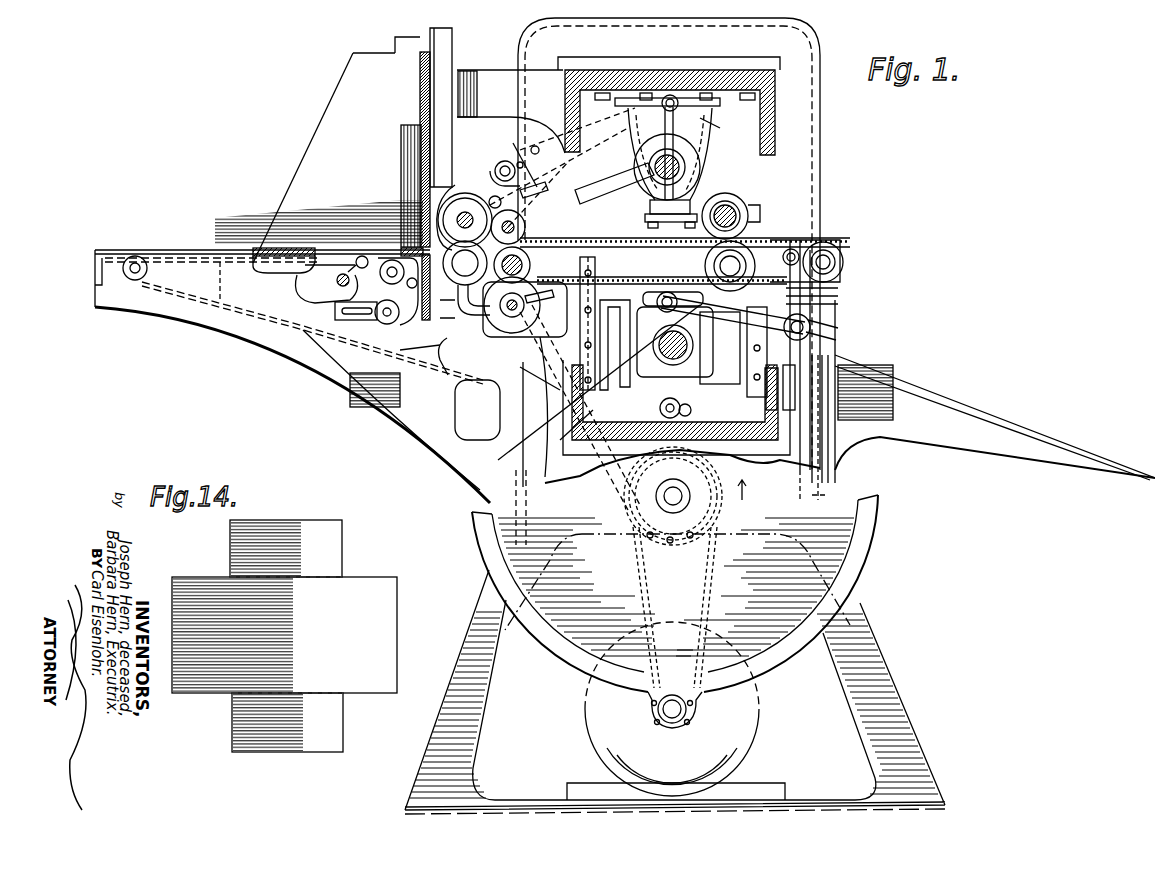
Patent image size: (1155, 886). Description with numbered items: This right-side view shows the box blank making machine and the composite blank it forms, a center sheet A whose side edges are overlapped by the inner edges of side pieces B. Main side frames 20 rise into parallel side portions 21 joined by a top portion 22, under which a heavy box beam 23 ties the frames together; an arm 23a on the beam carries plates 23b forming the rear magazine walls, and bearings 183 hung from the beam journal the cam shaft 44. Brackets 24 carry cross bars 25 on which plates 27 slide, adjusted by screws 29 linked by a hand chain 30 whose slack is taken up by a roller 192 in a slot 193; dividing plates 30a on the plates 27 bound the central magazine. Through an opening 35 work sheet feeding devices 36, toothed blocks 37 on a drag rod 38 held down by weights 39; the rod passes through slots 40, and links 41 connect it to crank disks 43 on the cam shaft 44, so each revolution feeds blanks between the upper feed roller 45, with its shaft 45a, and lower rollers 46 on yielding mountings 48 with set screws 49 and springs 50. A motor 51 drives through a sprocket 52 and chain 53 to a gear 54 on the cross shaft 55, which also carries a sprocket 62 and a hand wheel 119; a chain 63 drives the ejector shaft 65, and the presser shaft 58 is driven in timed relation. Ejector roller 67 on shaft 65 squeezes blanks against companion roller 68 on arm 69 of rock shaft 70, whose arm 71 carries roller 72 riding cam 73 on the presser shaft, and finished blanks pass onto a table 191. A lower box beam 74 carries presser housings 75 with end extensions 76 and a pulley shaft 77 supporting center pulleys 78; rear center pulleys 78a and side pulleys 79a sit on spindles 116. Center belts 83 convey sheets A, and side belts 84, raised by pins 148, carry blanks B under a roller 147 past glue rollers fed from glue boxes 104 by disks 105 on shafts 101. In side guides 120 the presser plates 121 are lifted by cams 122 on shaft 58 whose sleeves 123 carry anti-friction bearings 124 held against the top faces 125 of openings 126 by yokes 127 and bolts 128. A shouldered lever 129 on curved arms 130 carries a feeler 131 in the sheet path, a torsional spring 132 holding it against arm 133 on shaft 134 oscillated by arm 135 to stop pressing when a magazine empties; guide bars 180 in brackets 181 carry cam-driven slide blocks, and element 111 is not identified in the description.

In FIG. 1, the main side frames 20 is at (488, 618).
In FIG. 1, the side portions 21 is at (520, 58).
In FIG. 1, the connecting top portion 22 is at (669, 50).
In FIG. 1, the box beam 23 is at (745, 70).
In FIG. 1, the arm 23a is at (492, 137).
In FIG. 1, the plates 23b is at (420, 88).
In FIG. 1, the brackets 24 is at (262, 342).
In FIG. 1, the cross supporting bars 25 is at (95, 278).
In FIG. 1, the plates 27 is at (200, 250).
In FIG. 1, the adjusting screws 29 is at (668, 96).
In FIG. 1, the hand operated chain 30 is at (411, 277).
In FIG. 1, the dividing plate 30a is at (337, 158).
In FIG. 1, the slot or opening 35 is at (305, 235).
In FIG. 1, the sheet feeding devices 36 is at (360, 258).
In FIG. 1, the toothed blocks 37 is at (365, 258).
In FIG. 1, the drag rod 38 is at (343, 272).
In FIG. 1, the weight 39 is at (316, 289).
In FIG. 1, the slots 40 is at (300, 260).
In FIG. 1, the links 41 is at (620, 190).
In FIG. 1, the crank disks 43 is at (700, 170).
In FIG. 1, the cam shaft 44 is at (690, 160).
In FIG. 1, the upper feed roller 45 is at (460, 212).
In FIG. 1, the extended shaft 45a is at (462, 220).
In FIG. 1, the lower roller 46 is at (456, 285).
In FIG. 1, the yielding mountings 48 is at (456, 323).
In FIG. 1, the set screws 49 is at (433, 356).
In FIG. 1, the springs 50 is at (412, 359).
In FIG. 1, the motor 51 is at (760, 708).
In FIG. 1, the sprocket 52 is at (675, 692).
In FIG. 1, the chain or belt 53 is at (675, 607).
In FIG. 1, the gear 54 is at (670, 550).
In FIG. 1, the cross shaft 55 is at (664, 502).
In FIG. 1, the presser shaft 58 is at (675, 358).
In FIG. 1, the sprocket 62 is at (728, 500).
In FIG. 1, the chain or belt 63 is at (592, 462).
In FIG. 1, the ejector shaft 65 is at (732, 205).
In FIG. 1, the ejector roller 67 is at (752, 215).
In FIG. 1, the companion roller 68 is at (705, 266).
In FIG. 1, the arm 69 is at (820, 292).
In FIG. 1, the rock shaft 70 is at (812, 330).
In FIG. 1, the arm 71 is at (822, 300).
In FIG. 1, the roller 72 is at (701, 335).
In FIG. 1, the cam 73 is at (649, 403).
In FIG. 1, the lower box beam 74 is at (802, 485).
In FIG. 1, the presser housings 75 is at (862, 380).
In FIG. 1, the end extensions 76 is at (830, 286).
In FIG. 1, the pulley shaft 77 is at (546, 268).
In FIG. 1, the center pulleys 78 is at (531, 265).
In FIG. 1, the rear center pulleys 78a is at (844, 258).
In FIG. 1, the rear side pulleys 79a is at (800, 245).
In FIG. 1, the center belts 83 is at (600, 321).
In FIG. 1, the side belts 84 is at (685, 232).
In FIG. 1, the shafts 101 is at (397, 390).
In FIG. 1, the glue boxes 104 is at (497, 412).
In FIG. 1, the glue feeding rollers 105 is at (535, 328).
In FIG. 1, the lever 111 is at (548, 292).
In FIG. 1, the spindles 116 is at (793, 250).
In FIG. 1, the hand wheel 119 is at (868, 558).
In FIG. 1, the side guides 120 is at (840, 362).
In FIG. 1, the presser plates 121 is at (662, 264).
In FIG. 1, the elongated cams 122 is at (762, 396).
In FIG. 1, the sleeves 123 is at (733, 315).
In FIG. 1, the anti-friction bearings 124 is at (656, 299).
In FIG. 1, the top faces 125 is at (659, 296).
In FIG. 1, the rectangular openings 126 is at (588, 388).
In FIG. 1, the yokes 127 is at (589, 424).
In FIG. 1, the bolts 128 is at (526, 307).
In FIG. 1, the shouldered lever 129 is at (528, 196).
In FIG. 1, the curved arms 130 is at (466, 175).
In FIG. 1, the feeler 131 is at (465, 220).
In FIG. 1, the torsional spring 132 is at (505, 162).
In FIG. 1, the arm 133 is at (524, 165).
In FIG. 1, the shaft 134 is at (533, 153).
In FIG. 1, the arm 135 is at (570, 130).
In FIG. 1, the roller 147 is at (526, 228).
In FIG. 1, the rollers or pins 148 is at (585, 222).
In FIG. 1, the guide bars 180 is at (671, 218).
In FIG. 1, the brackets 181 is at (681, 154).
In FIG. 1, the heavy bearings 183 is at (706, 128).
In FIG. 1, the table 191 is at (996, 412).
In FIG. 1, the gear or roller 192 is at (390, 380).
In FIG. 1, the slot 193 is at (345, 312).
In FIG. 1, the central sheets A is at (268, 222).
In FIG. 14, the central sheets A is at (282, 634).
In FIG. 14, the side blanks B is at (289, 638).